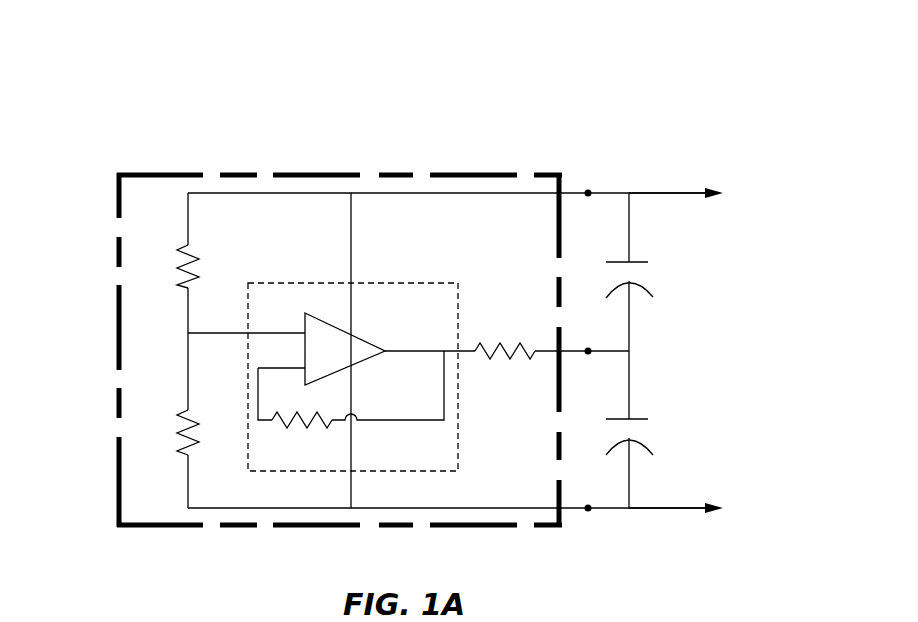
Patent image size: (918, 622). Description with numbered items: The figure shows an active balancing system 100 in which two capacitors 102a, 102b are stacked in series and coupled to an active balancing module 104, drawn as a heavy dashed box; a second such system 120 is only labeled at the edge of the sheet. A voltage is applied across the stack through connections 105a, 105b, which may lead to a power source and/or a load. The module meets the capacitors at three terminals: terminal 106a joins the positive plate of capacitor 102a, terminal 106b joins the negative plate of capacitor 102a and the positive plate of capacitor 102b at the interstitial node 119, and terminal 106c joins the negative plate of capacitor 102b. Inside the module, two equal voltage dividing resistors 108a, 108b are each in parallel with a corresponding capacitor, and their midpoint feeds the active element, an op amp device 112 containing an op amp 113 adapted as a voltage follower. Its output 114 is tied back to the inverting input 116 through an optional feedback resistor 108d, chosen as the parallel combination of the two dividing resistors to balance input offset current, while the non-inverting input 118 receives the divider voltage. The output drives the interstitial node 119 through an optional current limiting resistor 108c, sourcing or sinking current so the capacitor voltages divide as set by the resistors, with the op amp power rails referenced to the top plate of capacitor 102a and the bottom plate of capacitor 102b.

The active balancing system 100 is at (736, 87).
The active balancing module 104 is at (118, 175).
The voltage dividing resistor 108a is at (186, 246).
The voltage dividing resistor 108b is at (182, 412).
The current limiting resistor 108c is at (527, 348).
The feedback resistor 108d is at (288, 422).
The op amp device 112 is at (388, 283).
The op amp 113 is at (308, 316).
The output 114 is at (430, 342).
The inverting input 116 is at (281, 381).
The non-inverting input 118 is at (246, 343).
The interstitial node 119 is at (632, 348).
The capacitor 102a is at (637, 261).
The capacitor 102b is at (637, 418).
The terminal 106a is at (588, 193).
The terminal 106b is at (588, 351).
The terminal 106c is at (588, 508).
The connection 105a is at (706, 193).
The connection 105b is at (706, 508).
The active balancing system 120 is at (794, 615).